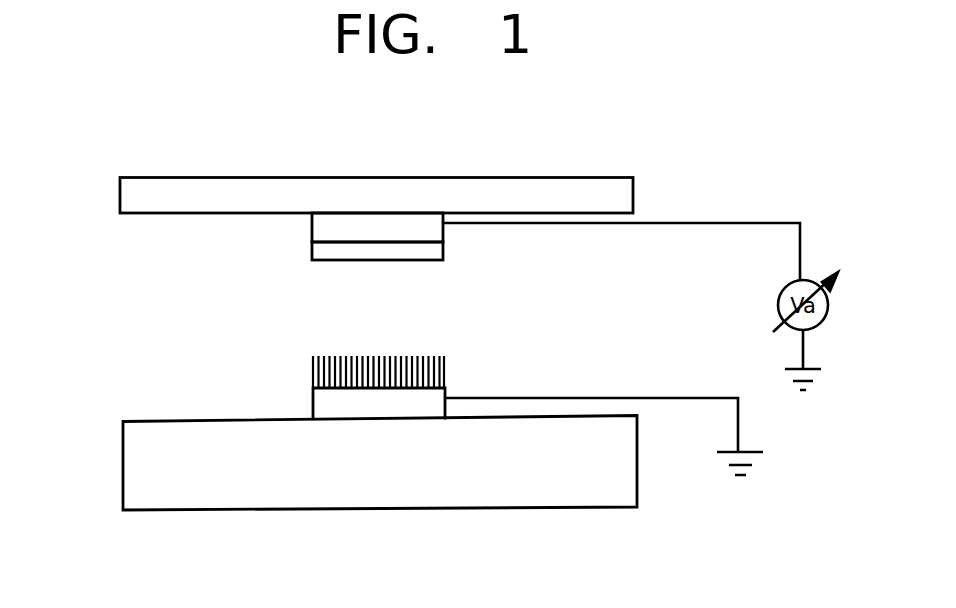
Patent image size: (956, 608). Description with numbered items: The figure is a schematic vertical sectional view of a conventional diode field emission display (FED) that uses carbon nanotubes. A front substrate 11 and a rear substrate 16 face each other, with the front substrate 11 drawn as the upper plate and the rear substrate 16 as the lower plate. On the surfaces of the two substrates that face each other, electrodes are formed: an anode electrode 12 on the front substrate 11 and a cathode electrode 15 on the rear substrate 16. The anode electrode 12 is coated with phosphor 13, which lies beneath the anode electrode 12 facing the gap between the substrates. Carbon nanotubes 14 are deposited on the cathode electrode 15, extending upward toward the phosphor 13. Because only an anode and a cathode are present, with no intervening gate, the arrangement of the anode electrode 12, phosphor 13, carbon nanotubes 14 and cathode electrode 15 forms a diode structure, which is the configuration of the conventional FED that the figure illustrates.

The front substrate 11 is at (633, 193).
The anode electrode 12 is at (318, 227).
The phosphor 13 is at (318, 250).
The carbon nanotubes 14 is at (444, 348).
The cathode electrode 15 is at (320, 397).
The rear substrate 16 is at (135, 469).